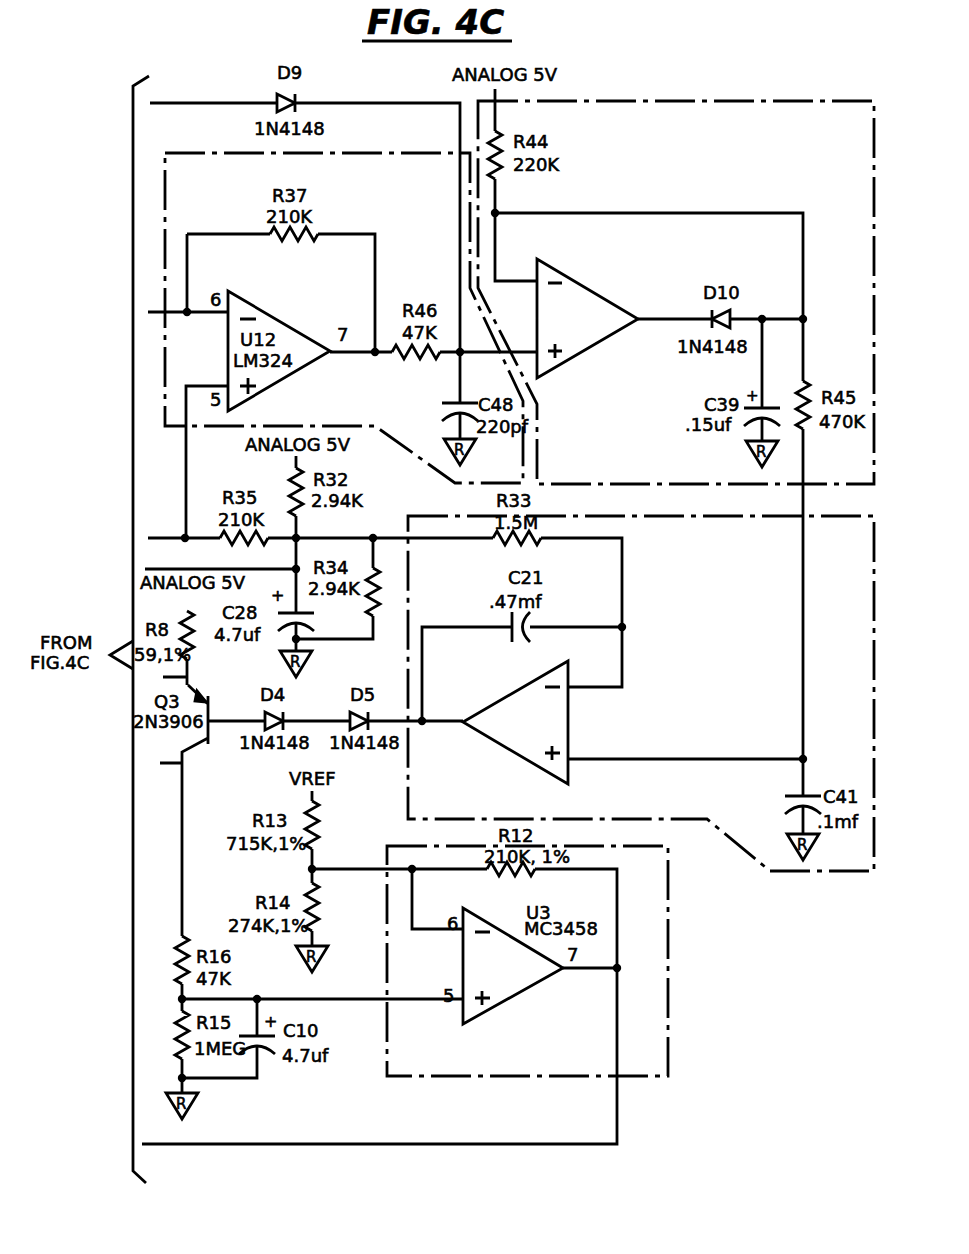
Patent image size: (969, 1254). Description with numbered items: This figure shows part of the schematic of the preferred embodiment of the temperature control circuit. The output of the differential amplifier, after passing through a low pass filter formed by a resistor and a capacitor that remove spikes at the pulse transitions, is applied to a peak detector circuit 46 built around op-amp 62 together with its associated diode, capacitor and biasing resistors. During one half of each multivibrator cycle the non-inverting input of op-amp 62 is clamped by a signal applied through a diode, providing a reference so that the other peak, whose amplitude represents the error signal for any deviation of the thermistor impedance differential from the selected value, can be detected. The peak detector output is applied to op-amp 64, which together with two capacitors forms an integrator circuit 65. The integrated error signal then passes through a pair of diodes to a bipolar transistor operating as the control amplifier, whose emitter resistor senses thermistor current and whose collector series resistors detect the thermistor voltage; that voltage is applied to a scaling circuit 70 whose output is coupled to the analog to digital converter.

The peak detector circuit 46 is at (683, 101).
The op-amp 62 is at (583, 284).
The op-amp 64 is at (568, 717).
The integrator circuit 65 is at (728, 516).
The scaling circuit 70 is at (668, 973).